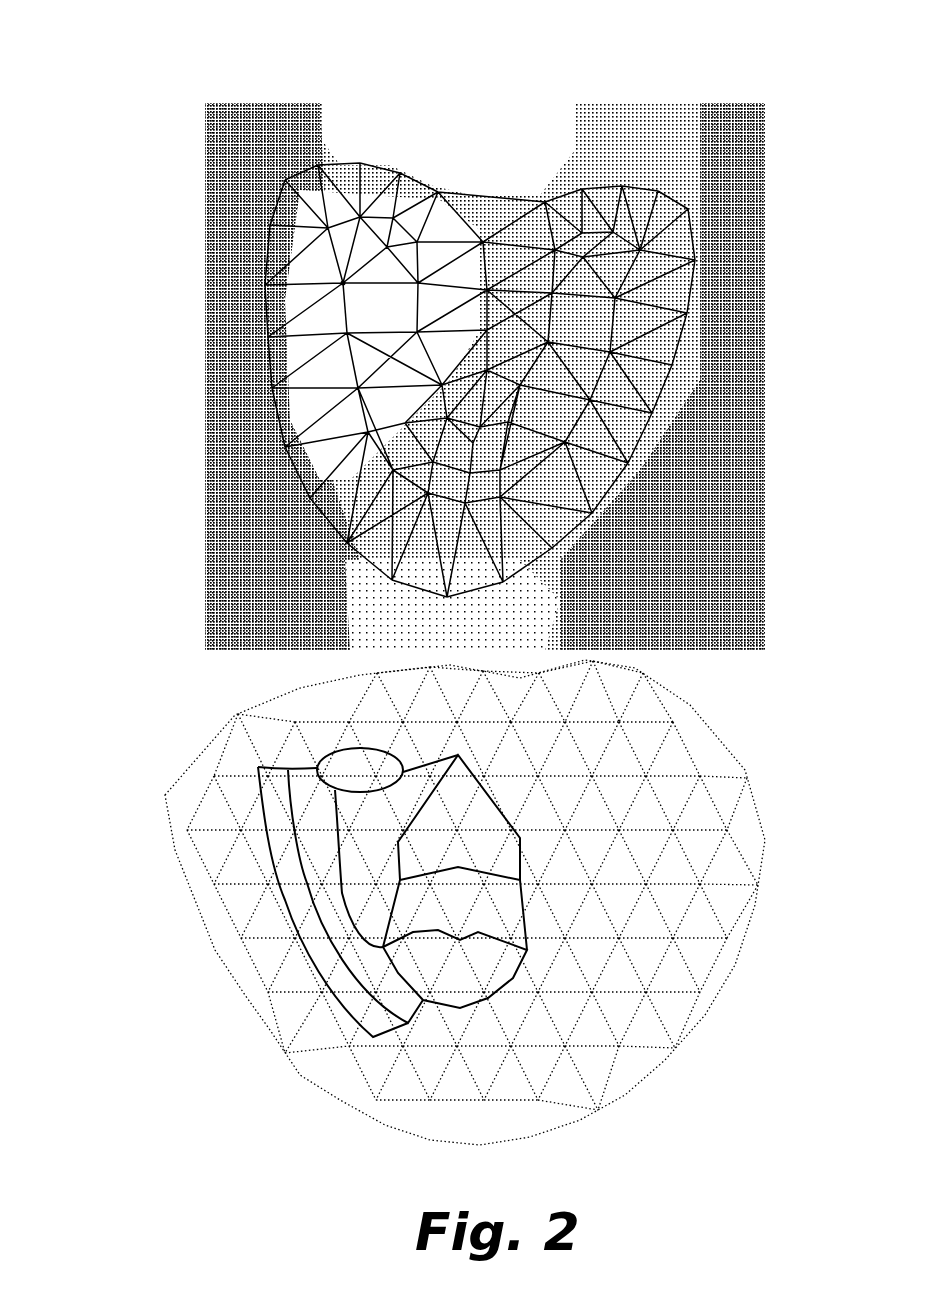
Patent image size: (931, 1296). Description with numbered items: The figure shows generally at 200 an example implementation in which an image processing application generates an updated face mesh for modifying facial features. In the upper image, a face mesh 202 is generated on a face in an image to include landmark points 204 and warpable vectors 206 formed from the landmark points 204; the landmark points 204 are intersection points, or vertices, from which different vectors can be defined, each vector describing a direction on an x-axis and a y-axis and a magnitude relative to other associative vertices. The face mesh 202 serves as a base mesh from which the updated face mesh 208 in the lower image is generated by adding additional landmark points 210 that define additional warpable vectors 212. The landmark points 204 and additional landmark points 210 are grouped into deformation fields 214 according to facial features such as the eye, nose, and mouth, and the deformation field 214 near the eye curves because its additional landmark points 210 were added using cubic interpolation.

The example implementation 200 is at (191, 68).
The face mesh 202 is at (688, 209).
The landmark points 204 is at (330, 279).
The warpable vectors 206 is at (326, 305).
The updated face mesh 208 is at (745, 770).
The additional landmark points 210 is at (290, 1020).
The additional warpable vectors 212 is at (302, 1040).
The deformation field 214 is at (244, 760).